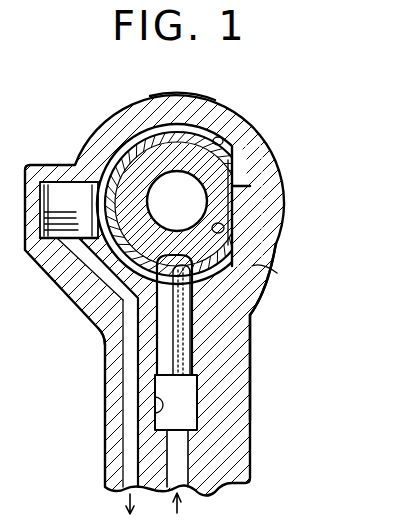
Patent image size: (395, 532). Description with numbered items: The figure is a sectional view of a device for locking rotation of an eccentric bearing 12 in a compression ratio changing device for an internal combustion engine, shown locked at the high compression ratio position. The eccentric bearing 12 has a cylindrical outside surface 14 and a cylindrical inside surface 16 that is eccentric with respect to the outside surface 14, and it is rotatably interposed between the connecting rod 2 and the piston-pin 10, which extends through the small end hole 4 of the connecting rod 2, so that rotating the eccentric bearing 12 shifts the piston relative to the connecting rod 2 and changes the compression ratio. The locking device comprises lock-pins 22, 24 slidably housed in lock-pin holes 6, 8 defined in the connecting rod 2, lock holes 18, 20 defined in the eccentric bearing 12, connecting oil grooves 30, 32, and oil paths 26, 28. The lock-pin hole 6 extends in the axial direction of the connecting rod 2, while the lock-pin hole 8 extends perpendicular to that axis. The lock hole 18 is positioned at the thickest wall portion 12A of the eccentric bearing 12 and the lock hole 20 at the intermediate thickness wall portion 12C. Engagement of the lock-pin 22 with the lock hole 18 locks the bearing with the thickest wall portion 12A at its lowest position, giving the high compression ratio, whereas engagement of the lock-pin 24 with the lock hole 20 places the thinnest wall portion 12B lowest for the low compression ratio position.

The connecting rod 2 is at (238, 437).
The small end hole 4 is at (218, 138).
The lock-pin hole 6 is at (157, 411).
The lock-pin hole 8 is at (55, 262).
The piston-pin 10 is at (238, 156).
The eccentric bearing 12 is at (250, 313).
The thickest wall portion 12A is at (105, 335).
The thinnest wall portion 12B is at (182, 135).
The intermediate thickness wall portion 12C is at (240, 200).
The cylindrical outside surface 14 is at (272, 244).
The cylindrical inside surface 16 is at (277, 273).
The lock hole 18 is at (182, 332).
The lock hole 20 is at (262, 194).
The lock-pin 22 is at (198, 378).
The lock-pin 24 is at (62, 193).
The oil path 26 is at (218, 495).
The oil path 28 is at (129, 452).
The connecting oil groove 30 is at (90, 302).
The connecting oil groove 32 is at (270, 297).